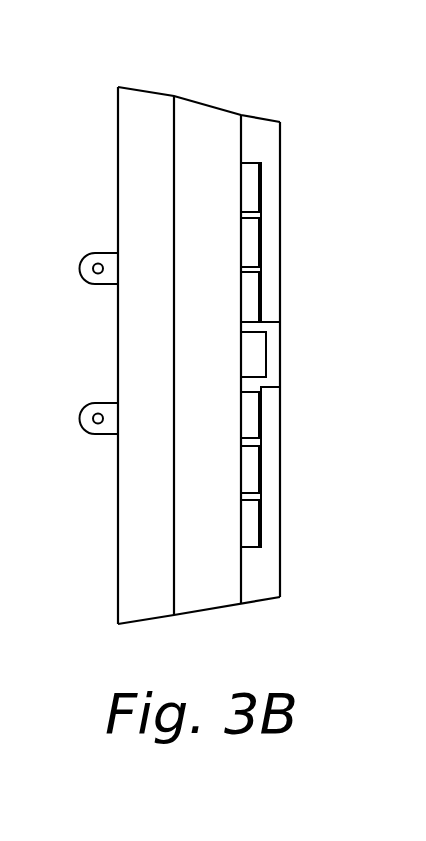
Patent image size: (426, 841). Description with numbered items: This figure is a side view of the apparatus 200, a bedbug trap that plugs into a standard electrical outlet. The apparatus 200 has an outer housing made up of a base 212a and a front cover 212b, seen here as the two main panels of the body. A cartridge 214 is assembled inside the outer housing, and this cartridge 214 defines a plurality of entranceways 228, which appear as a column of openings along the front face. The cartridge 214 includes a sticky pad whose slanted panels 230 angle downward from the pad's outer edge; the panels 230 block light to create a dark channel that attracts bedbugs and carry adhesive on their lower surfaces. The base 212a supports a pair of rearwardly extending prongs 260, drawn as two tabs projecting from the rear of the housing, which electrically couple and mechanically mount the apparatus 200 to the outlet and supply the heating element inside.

The apparatus 200 is at (157, 70).
The base 212a is at (138, 534).
The front cover 212b is at (358, 352).
The cartridge 214 is at (247, 212).
The entranceways 228 is at (250, 292).
The panels 230 is at (247, 518).
The prongs 260 is at (82, 262).